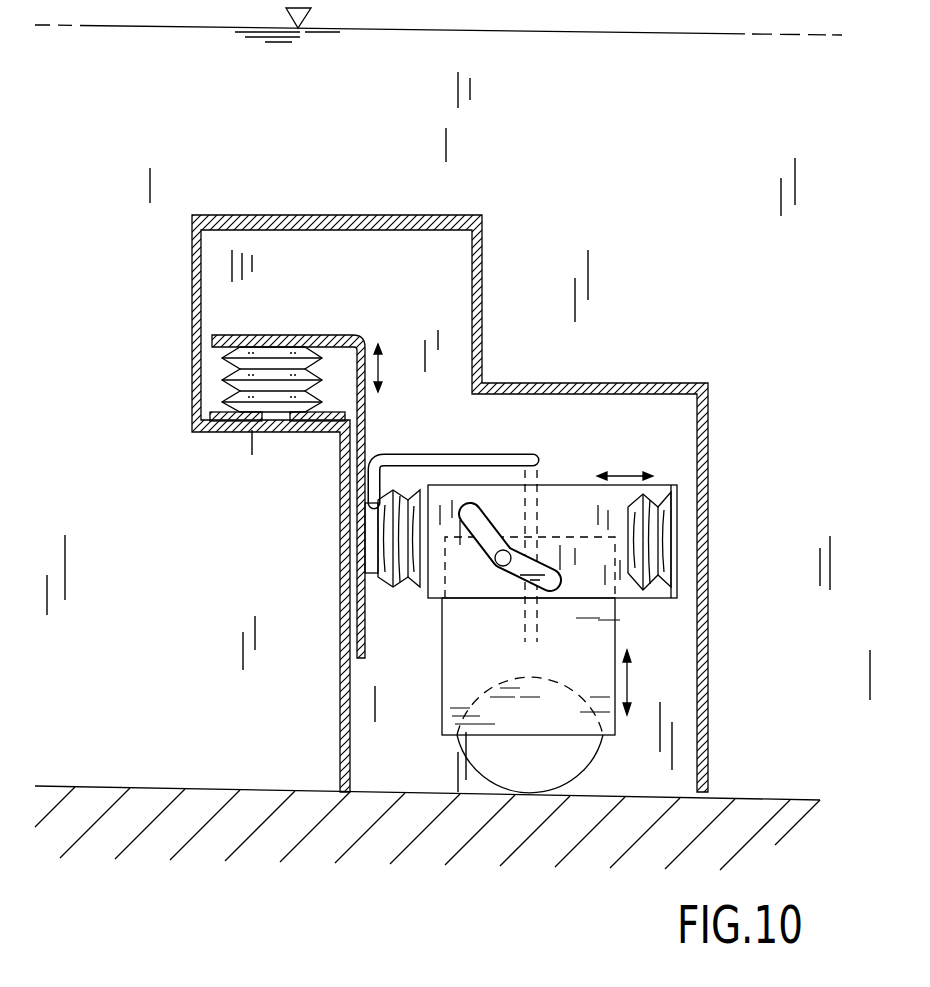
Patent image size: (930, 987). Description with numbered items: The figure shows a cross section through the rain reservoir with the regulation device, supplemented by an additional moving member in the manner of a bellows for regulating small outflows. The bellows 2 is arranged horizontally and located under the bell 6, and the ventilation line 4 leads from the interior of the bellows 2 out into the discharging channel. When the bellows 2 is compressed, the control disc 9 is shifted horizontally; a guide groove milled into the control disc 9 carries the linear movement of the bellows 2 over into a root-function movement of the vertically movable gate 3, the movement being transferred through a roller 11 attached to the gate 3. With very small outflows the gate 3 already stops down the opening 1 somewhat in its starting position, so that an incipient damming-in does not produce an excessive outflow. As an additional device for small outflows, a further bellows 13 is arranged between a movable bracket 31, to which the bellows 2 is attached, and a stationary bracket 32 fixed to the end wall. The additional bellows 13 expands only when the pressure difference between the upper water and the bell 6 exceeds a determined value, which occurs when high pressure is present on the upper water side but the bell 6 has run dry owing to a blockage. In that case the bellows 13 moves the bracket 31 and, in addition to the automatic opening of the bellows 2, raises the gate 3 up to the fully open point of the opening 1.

The opening 1 is at (578, 758).
The bellows 2 is at (663, 507).
The gate 3 is at (605, 627).
The ventilation line 4 is at (477, 455).
The bell 6 is at (705, 585).
The control disc 9 is at (567, 487).
The roller 11 is at (497, 568).
The additional bellows 13 is at (270, 362).
The movable bracket 31 is at (367, 418).
The stationary bracket 32 is at (240, 416).